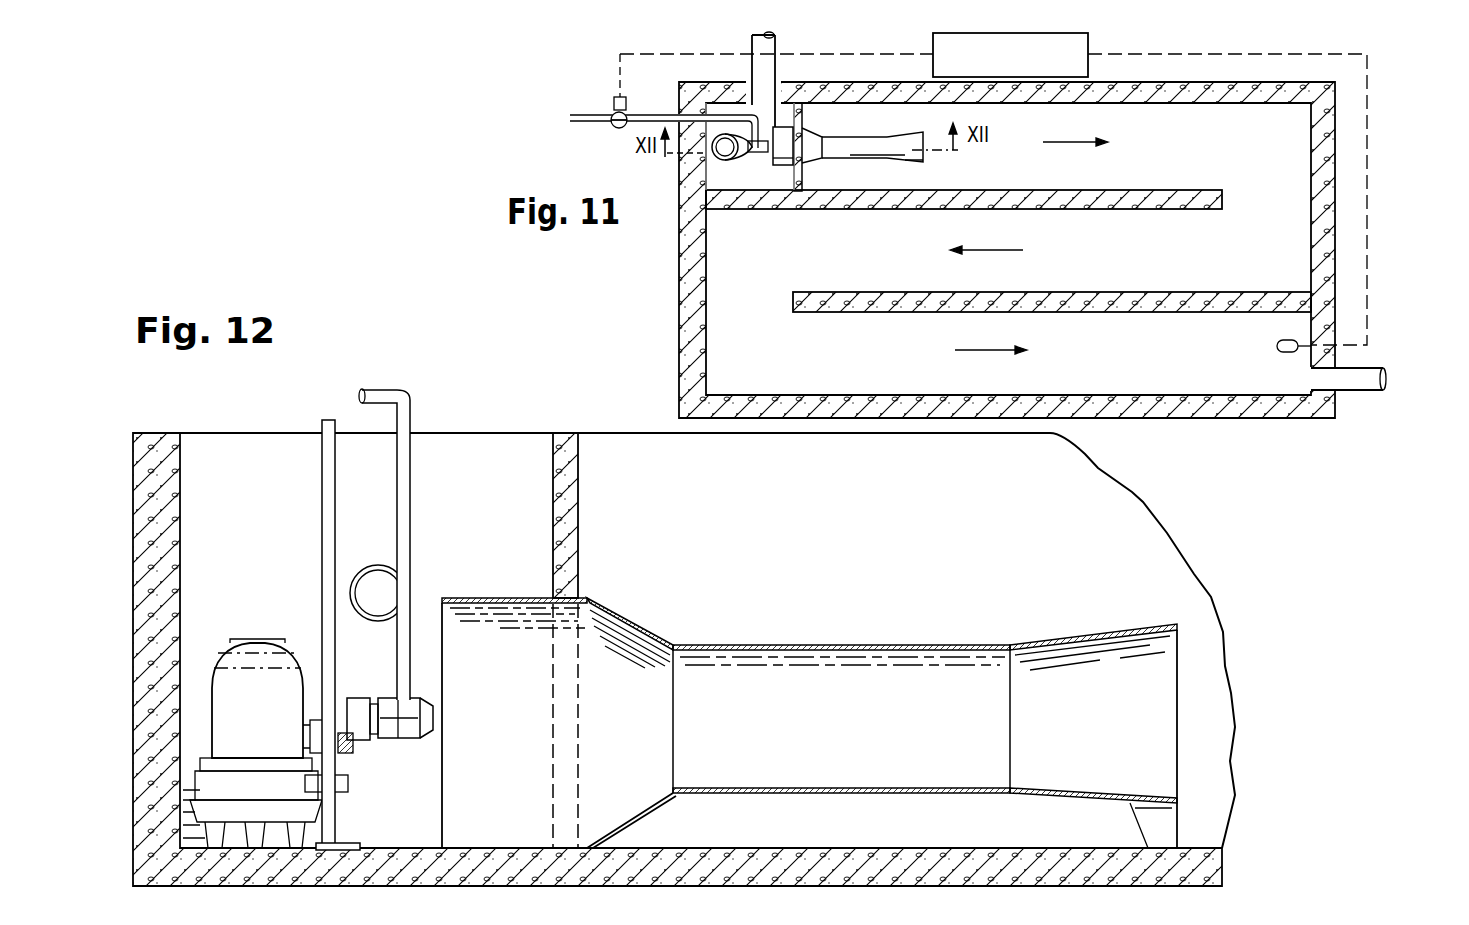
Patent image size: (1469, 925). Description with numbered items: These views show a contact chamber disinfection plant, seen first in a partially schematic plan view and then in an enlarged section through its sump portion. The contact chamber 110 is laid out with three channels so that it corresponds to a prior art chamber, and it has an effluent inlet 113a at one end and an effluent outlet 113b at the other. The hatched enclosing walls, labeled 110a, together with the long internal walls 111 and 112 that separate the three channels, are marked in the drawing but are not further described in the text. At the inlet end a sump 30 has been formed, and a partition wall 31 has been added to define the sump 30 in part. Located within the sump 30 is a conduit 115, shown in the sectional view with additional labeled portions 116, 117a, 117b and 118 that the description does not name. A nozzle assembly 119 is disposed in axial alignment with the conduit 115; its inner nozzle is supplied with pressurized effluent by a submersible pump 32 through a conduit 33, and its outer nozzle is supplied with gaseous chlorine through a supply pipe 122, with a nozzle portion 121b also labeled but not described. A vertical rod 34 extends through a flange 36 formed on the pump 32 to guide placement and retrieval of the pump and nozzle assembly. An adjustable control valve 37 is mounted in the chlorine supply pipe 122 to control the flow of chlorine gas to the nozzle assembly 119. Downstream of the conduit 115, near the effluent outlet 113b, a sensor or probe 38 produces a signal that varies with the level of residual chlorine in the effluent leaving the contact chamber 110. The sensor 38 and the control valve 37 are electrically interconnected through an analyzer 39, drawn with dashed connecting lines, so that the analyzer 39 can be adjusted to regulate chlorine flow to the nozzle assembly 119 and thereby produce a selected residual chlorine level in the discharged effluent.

In FIG. 11, the sump 30 is at (744, 188).
In FIG. 12, the sump 30 is at (244, 557).
In FIG. 11, the partition wall 31 is at (802, 116).
In FIG. 12, the partition wall 31 is at (576, 548).
In FIG. 11, the submersible pump 32 is at (713, 151).
In FIG. 12, the submersible pump 32 is at (215, 703).
In FIG. 12, the conduit 33 is at (346, 712).
In FIG. 12, the vertical rod 34 is at (322, 600).
In FIG. 12, the flange 36 is at (352, 846).
In FIG. 11, the adjustable control valve 37 is at (612, 104).
In FIG. 11, the sensor or probe 38 is at (1277, 346).
In FIG. 11, the analyzer 39 is at (1030, 63).
In FIG. 11, the contact chamber 110 is at (1009, 235).
In FIG. 11, the tank wall 110a is at (1268, 82).
In FIG. 12, the tank wall 110a is at (165, 600).
In FIG. 11, the upper baffle 111 is at (1142, 190).
In FIG. 11, the lower baffle 112 is at (1116, 292).
In FIG. 11, the effluent inlet 113a is at (752, 68).
In FIG. 12, the effluent inlet 113a is at (378, 565).
In FIG. 11, the effluent outlet 113b is at (1372, 368).
In FIG. 11, the conduit 115 is at (859, 162).
In FIG. 12, the conduit 115 is at (713, 640).
In FIG. 11, the inlet housing 116 is at (785, 127).
In FIG. 12, the inlet housing 116 is at (482, 598).
In FIG. 11, the converging section 117a is at (831, 161).
In FIG. 12, the converging section 117a is at (628, 635).
In FIG. 11, the diverging section 117b is at (912, 162).
In FIG. 12, the diverging section 117b is at (1058, 627).
In FIG. 11, the venturi tube 118 is at (878, 130).
In FIG. 12, the venturi tube 118 is at (850, 645).
In FIG. 11, the nozzle assembly 119 is at (760, 158).
In FIG. 12, the nozzle assembly 119 is at (402, 728).
In FIG. 12, the nozzle tip 121b is at (435, 717).
In FIG. 11, the supply pipe 122 is at (647, 113).
In FIG. 12, the supply pipe 122 is at (412, 520).